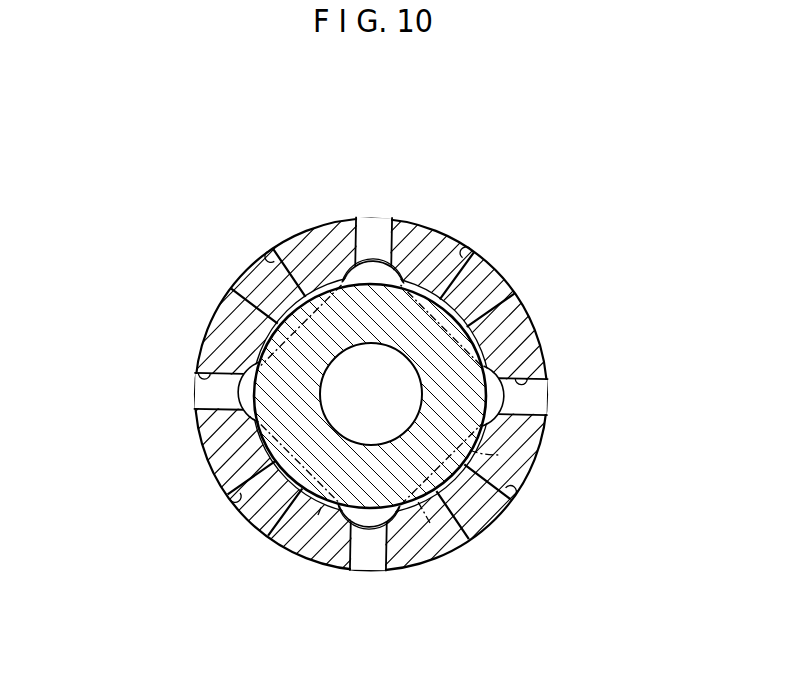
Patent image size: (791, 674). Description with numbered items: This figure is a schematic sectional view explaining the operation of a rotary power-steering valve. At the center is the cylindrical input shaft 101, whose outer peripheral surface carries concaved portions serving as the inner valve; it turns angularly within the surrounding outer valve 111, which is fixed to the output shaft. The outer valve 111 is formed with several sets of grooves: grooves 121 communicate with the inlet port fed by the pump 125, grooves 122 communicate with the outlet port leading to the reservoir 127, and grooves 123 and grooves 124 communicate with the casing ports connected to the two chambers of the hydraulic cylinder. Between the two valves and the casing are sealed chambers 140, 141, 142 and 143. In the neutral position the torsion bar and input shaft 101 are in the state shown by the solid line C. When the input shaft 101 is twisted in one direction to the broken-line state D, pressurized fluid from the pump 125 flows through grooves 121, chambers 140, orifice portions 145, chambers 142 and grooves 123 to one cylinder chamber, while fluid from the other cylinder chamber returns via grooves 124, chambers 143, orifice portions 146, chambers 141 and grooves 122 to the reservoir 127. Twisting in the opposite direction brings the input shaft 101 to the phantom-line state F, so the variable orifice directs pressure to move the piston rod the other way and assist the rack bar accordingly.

The input shaft 101 is at (478, 366).
The outer valve 111 is at (428, 236).
The grooves 121 is at (474, 262).
The grooves 122 is at (270, 262).
The grooves 123 is at (200, 380).
The grooves 124 is at (368, 275).
The pump 125 is at (505, 261).
The reservoir 127 is at (225, 240).
The chambers 140 is at (467, 298).
The chambers 141 is at (242, 284).
The chambers 142 is at (487, 407).
The chambers 143 is at (381, 262).
The orifice portions 145 is at (445, 378).
The orifice portions 146 is at (333, 275).
The solid line (neutral state) C is at (318, 515).
The state D (broken line) D is at (500, 455).
The state F (phantom line) F is at (430, 523).